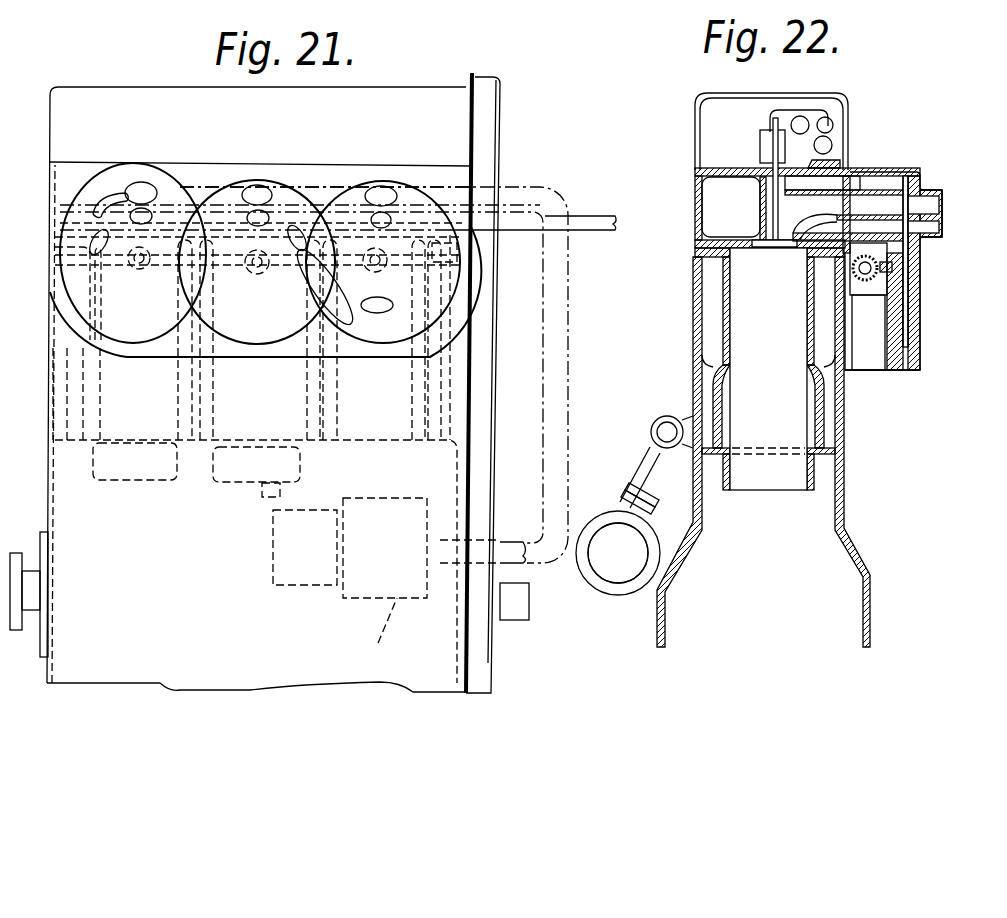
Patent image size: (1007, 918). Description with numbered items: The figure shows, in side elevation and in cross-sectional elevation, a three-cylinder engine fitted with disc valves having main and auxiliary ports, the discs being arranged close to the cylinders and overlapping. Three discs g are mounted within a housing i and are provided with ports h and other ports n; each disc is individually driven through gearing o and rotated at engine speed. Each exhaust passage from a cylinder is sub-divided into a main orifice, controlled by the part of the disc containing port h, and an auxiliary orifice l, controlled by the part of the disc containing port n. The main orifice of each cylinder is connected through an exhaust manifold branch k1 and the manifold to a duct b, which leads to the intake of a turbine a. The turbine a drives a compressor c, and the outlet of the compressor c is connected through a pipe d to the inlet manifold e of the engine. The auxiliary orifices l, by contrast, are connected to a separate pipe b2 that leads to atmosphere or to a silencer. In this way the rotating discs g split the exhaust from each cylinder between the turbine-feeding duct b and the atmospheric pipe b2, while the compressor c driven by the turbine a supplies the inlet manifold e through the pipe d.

In FIG. 21, the turbine a is at (372, 594).
In FIG. 22, the turbine a is at (648, 582).
In FIG. 21, the duct b is at (563, 429).
In FIG. 22, the duct b is at (940, 207).
In FIG. 21, the pipe b2 is at (589, 218).
In FIG. 22, the pipe b2 is at (940, 232).
In FIG. 21, the compressor c is at (278, 541).
In FIG. 22, the compressor c is at (610, 572).
In FIG. 21, the pipe d is at (267, 477).
In FIG. 22, the pipe d is at (640, 471).
In FIG. 22, the inlet manifold e is at (674, 413).
In FIG. 21, the disc g is at (182, 185).
In FIG. 22, the disc g is at (922, 333).
In FIG. 21, the port h is at (104, 198).
In FIG. 22, the port h is at (905, 222).
In FIG. 21, the housing i is at (66, 311).
In FIG. 22, the housing i is at (902, 360).
In FIG. 21, the exhaust manifold branch k1 is at (140, 190).
In FIG. 22, the exhaust manifold branch k1 is at (930, 200).
In FIG. 21, the auxiliary orifice l is at (428, 192).
In FIG. 22, the auxiliary orifice l is at (916, 243).
In FIG. 21, the port n is at (95, 232).
In FIG. 22, the port n is at (902, 215).
In FIG. 21, the gearing o is at (133, 270).
In FIG. 22, the gearing o is at (866, 281).